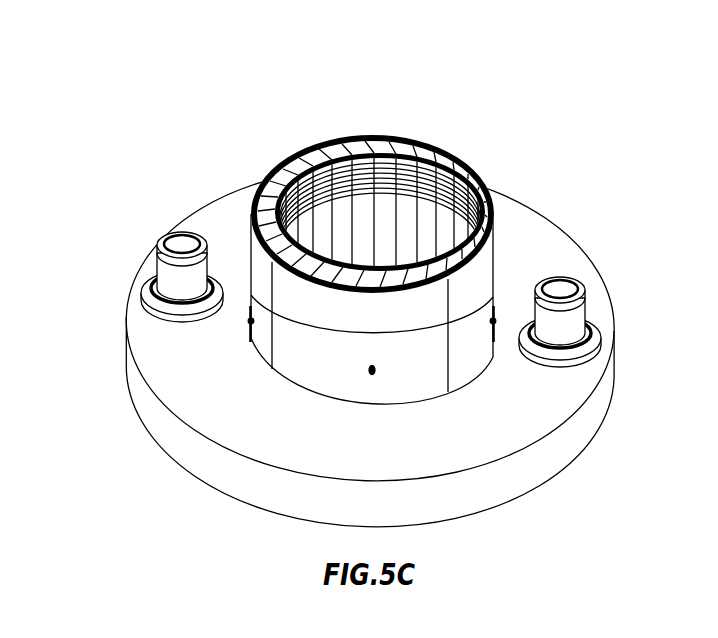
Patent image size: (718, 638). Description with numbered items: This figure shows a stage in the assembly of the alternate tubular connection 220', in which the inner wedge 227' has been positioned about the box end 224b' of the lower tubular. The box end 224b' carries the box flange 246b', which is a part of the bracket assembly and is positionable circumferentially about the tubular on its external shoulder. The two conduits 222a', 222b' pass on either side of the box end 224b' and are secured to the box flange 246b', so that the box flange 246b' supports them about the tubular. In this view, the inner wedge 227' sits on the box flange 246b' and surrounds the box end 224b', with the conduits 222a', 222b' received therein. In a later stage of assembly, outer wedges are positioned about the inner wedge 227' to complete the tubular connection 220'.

The tubular connection 220' is at (388, 291).
The box end 224b' is at (361, 202).
The inner wedge 227' is at (432, 278).
The conduit 222a' is at (141, 293).
The conduit 222b' is at (618, 303).
The box flange 246b' is at (379, 344).